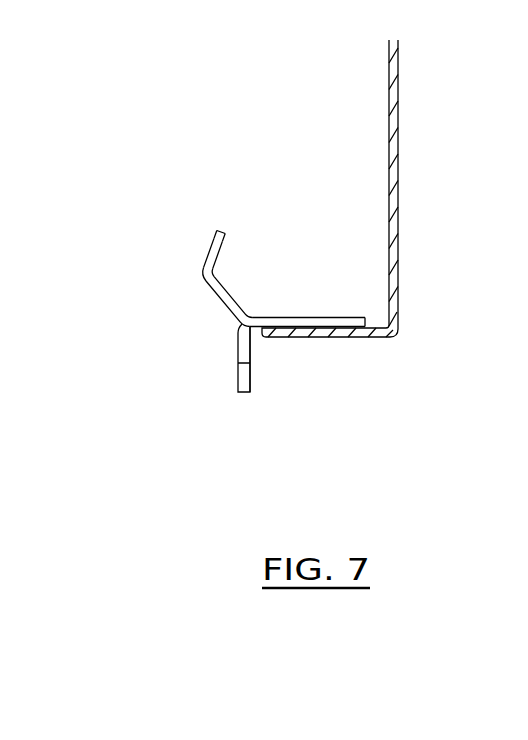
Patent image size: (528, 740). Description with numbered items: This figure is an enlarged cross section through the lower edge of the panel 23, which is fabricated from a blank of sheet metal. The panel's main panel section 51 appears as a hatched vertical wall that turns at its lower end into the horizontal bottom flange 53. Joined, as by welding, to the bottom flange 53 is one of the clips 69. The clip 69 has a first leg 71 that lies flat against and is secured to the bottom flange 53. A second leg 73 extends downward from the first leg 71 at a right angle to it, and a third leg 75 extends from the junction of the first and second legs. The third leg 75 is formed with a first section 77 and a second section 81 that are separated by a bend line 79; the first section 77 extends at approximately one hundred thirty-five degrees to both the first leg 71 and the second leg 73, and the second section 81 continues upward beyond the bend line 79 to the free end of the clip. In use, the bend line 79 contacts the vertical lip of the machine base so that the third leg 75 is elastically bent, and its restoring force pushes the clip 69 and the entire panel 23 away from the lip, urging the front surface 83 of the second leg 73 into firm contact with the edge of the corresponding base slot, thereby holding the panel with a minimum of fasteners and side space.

The panel 23 is at (380, 223).
The main panel section 51 is at (398, 110).
The bottom flange 53 is at (343, 338).
The clip 69 is at (230, 255).
The first leg 71 is at (312, 317).
The second leg 73 is at (237, 378).
The third leg 75 is at (205, 255).
The first section 77 is at (222, 310).
The bend line 79 is at (200, 277).
The second section 81 is at (215, 232).
The front surface 83 is at (253, 357).